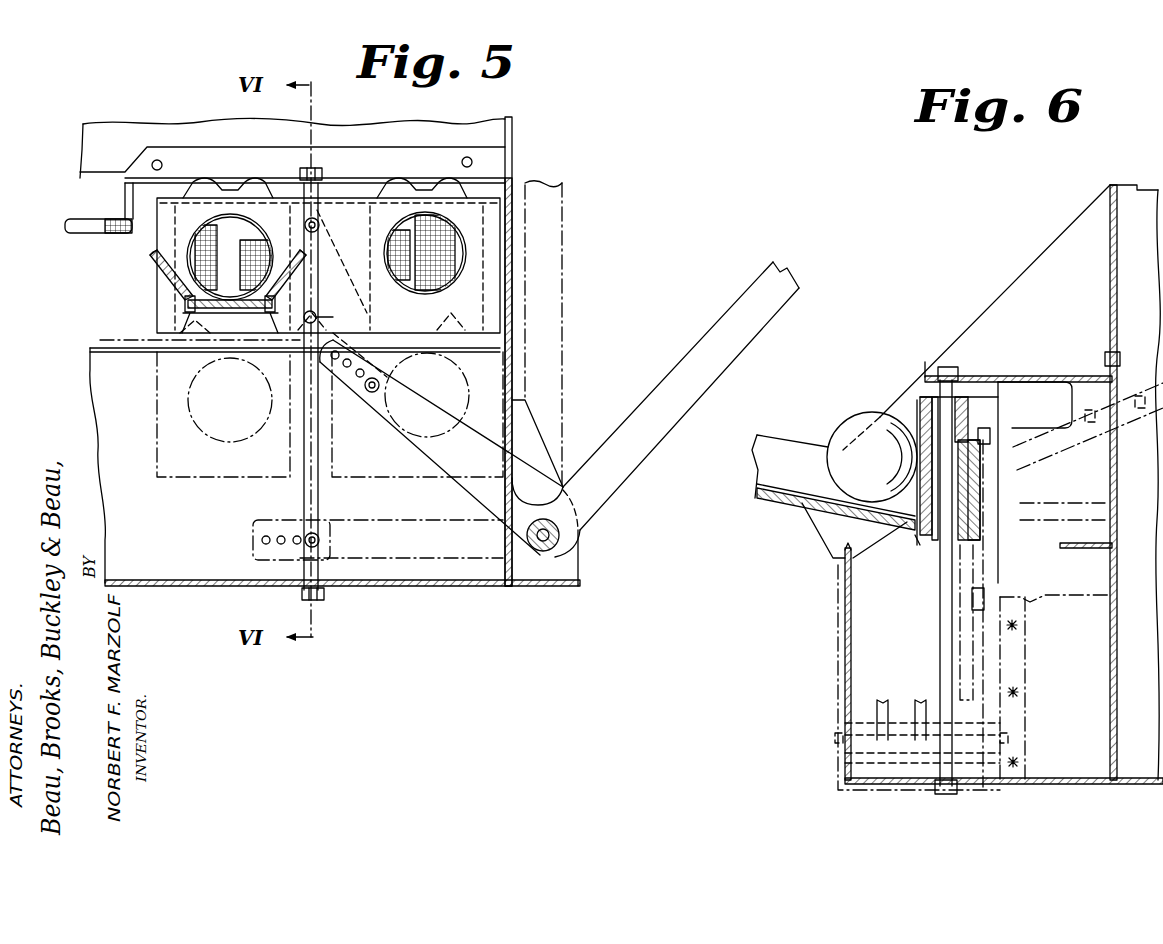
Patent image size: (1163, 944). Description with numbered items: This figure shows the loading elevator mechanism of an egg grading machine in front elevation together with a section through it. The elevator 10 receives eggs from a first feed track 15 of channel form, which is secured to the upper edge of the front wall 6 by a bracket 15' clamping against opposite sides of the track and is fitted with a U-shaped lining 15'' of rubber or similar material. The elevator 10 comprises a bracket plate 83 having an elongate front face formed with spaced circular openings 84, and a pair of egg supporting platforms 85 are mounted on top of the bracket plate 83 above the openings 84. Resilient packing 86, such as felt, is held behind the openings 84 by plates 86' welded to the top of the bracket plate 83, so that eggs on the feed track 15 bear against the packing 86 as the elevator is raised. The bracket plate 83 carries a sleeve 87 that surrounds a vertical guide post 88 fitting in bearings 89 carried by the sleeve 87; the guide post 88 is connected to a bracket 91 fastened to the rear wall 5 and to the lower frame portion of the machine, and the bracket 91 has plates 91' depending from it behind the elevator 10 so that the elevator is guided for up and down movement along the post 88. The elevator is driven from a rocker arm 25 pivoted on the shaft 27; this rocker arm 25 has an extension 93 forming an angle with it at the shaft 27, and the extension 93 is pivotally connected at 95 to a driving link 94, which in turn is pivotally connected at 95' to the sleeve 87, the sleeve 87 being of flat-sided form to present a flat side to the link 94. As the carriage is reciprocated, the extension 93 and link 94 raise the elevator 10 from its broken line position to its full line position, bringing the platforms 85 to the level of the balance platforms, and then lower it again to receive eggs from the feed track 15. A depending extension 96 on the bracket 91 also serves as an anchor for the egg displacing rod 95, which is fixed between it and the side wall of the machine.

In FIG. 6, the rear wall 5 is at (1118, 648).
In FIG. 6, the front wall 6 is at (843, 580).
In FIG. 5, the elevator 10 is at (487, 238).
In FIG. 6, the elevator 10 is at (915, 541).
In FIG. 5, the first feed track 15 is at (204, 281).
In FIG. 6, the first feed track 15 is at (833, 461).
In FIG. 6, the bracket 15' is at (832, 530).
In FIG. 5, the U-shaped lining 15'' is at (204, 279).
In FIG. 6, the U-shaped lining 15'' is at (843, 457).
In FIG. 5, the rocker arm 25 is at (693, 347).
In FIG. 5, the shaft 27 is at (560, 549).
In FIG. 6, the bracket plate 83 is at (920, 402).
In FIG. 5, the circular openings 84 is at (215, 226).
In FIG. 5, the egg supporting platforms 85 is at (256, 181).
In FIG. 5, the packing 86 is at (326, 261).
In FIG. 6, the packing 86 is at (836, 514).
In FIG. 5, the plates 86' is at (346, 320).
In FIG. 5, the sleeve 87 is at (333, 321).
In FIG. 6, the sleeve 87 is at (977, 506).
In FIG. 5, the guide post 88 is at (320, 190).
In FIG. 6, the guide post 88 is at (940, 637).
In FIG. 6, the bearings 89 is at (930, 546).
In FIG. 5, the bracket 91 is at (292, 165).
In FIG. 6, the bracket 91 is at (1018, 365).
In FIG. 6, the plates 91' is at (1026, 482).
In FIG. 5, the extension 93 is at (420, 458).
In FIG. 5, the driving link 94 is at (390, 365).
In FIG. 6, the driving link 94 is at (980, 473).
In FIG. 5, the pivot connection 95 is at (98, 244).
In FIG. 6, the pivot connection 95' is at (1020, 413).
In FIG. 5, the depending extension 96 is at (125, 200).